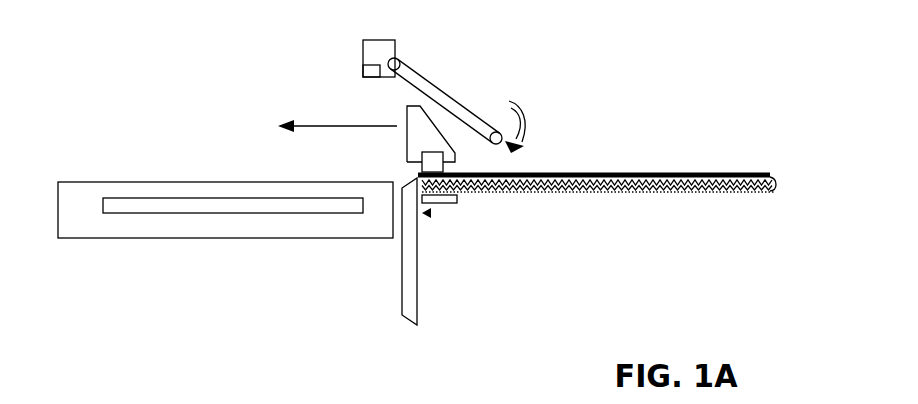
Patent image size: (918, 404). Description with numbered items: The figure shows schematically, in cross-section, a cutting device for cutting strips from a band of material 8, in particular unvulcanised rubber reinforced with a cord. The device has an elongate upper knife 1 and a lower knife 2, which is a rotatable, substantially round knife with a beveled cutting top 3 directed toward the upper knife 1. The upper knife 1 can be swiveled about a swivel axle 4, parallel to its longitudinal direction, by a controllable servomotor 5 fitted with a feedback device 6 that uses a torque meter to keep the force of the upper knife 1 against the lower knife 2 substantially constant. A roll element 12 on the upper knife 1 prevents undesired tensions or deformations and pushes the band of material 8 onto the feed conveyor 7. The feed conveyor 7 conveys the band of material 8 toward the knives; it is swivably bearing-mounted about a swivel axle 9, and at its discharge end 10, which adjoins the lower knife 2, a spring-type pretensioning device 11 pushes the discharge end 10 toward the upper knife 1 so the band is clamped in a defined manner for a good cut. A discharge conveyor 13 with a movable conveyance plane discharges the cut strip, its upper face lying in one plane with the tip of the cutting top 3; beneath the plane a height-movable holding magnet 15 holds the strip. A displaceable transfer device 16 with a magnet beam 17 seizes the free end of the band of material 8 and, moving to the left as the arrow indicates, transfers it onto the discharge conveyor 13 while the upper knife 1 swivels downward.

The upper knife 1 is at (441, 91).
The lower knife 2 is at (408, 277).
The cutting top 3 is at (415, 179).
The swivel axle 4 is at (398, 59).
The servomotor 5 is at (370, 50).
The feedback device 6 is at (365, 69).
The feed conveyor 7 is at (636, 190).
The band of material 8 is at (590, 175).
The swivel axle 9 is at (773, 193).
The discharge end 10 is at (455, 183).
The pretensioning device 11 is at (428, 213).
The roll element 12 is at (498, 132).
The discharge conveyor 13 is at (85, 182).
The holding magnet 15 is at (285, 215).
The transfer device 16 is at (408, 112).
The magnet beam 17 is at (430, 164).